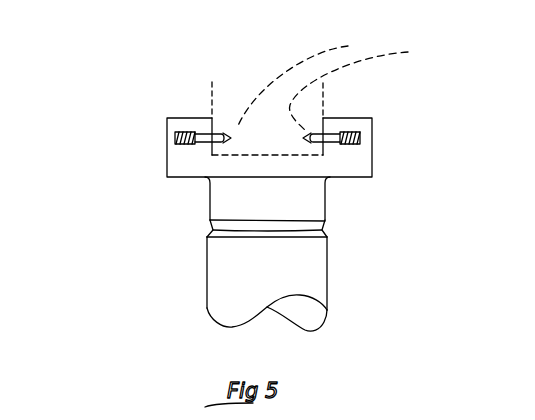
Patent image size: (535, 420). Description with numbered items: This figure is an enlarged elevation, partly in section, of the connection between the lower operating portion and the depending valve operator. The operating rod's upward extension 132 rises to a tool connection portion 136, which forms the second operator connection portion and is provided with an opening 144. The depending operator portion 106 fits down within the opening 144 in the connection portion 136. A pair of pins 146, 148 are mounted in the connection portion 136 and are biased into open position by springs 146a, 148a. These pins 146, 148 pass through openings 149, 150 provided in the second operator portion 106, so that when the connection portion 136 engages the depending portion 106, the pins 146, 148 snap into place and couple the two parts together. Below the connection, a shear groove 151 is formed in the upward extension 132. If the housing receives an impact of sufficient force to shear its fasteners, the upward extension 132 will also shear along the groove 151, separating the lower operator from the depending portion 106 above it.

The operator portion 106 is at (282, 143).
The upward extension 132 is at (313, 273).
The tool connection portion 136 is at (367, 165).
The opening 144 is at (212, 121).
The pin 146 is at (212, 122).
The spring 146a is at (183, 145).
The pin 148 is at (330, 122).
The spring 148a is at (372, 118).
The opening 149 is at (309, 82).
The opening 150 is at (366, 86).
The shear groove 151 is at (325, 229).